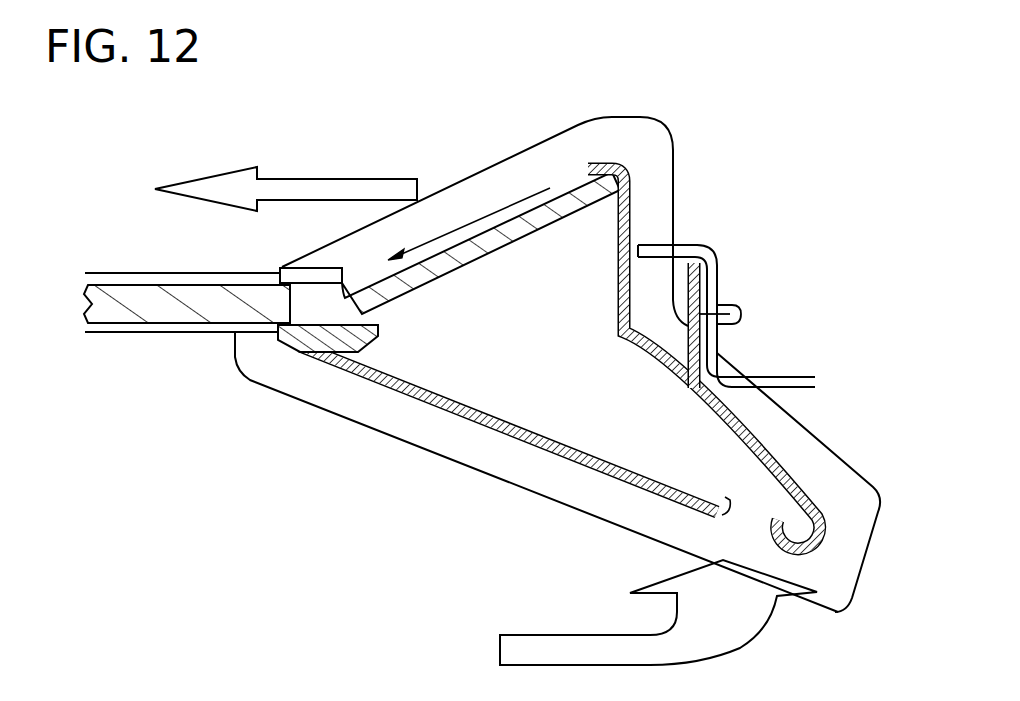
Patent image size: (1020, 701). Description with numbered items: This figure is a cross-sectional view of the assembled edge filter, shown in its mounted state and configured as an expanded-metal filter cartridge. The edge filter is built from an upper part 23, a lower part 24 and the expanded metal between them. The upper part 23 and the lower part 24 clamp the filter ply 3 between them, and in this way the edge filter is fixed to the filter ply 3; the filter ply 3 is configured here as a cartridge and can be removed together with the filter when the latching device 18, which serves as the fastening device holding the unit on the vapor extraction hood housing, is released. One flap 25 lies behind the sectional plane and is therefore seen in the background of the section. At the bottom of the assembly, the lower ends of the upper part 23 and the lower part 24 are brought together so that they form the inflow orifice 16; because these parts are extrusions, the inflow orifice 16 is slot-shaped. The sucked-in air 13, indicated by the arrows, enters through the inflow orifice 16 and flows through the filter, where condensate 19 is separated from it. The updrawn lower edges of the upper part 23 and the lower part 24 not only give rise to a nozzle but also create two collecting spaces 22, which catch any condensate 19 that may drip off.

The filter ply 3 is at (138, 305).
The sucked-in air 13 is at (297, 193).
The inflow orifice 16 is at (748, 522).
The latching device 18 is at (741, 315).
The condensate 19 is at (462, 229).
The collecting spaces 22 is at (712, 508).
The upper part 23 is at (630, 233).
The lower part 24 is at (420, 396).
The flap 25 is at (648, 170).